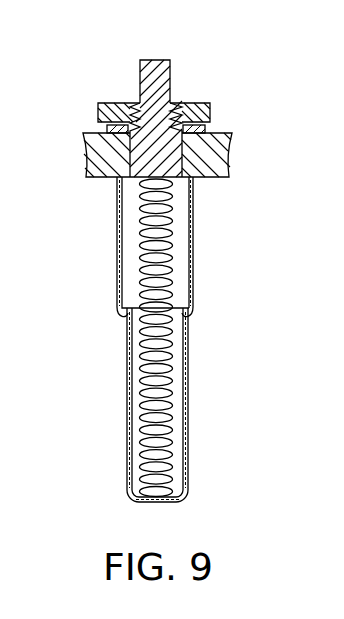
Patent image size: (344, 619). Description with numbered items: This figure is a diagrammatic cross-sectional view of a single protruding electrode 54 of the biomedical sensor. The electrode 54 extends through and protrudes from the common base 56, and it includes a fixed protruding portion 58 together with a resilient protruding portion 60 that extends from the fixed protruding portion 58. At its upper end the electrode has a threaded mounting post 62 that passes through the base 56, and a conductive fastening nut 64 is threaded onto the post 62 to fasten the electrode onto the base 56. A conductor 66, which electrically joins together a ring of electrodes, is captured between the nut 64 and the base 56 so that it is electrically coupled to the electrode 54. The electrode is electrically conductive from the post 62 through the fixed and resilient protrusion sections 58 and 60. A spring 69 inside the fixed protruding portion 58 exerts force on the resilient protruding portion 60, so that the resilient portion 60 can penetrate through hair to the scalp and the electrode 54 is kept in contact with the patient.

The protruding electrode 54 is at (103, 298).
The common base 56 is at (213, 154).
The fixed protruding portion 58 is at (193, 271).
The resilient protruding portion 60 is at (188, 427).
The mounting post 62 is at (153, 58).
The nut 64 is at (197, 102).
The first outer conductor 66 is at (107, 133).
The spring 69 is at (140, 247).